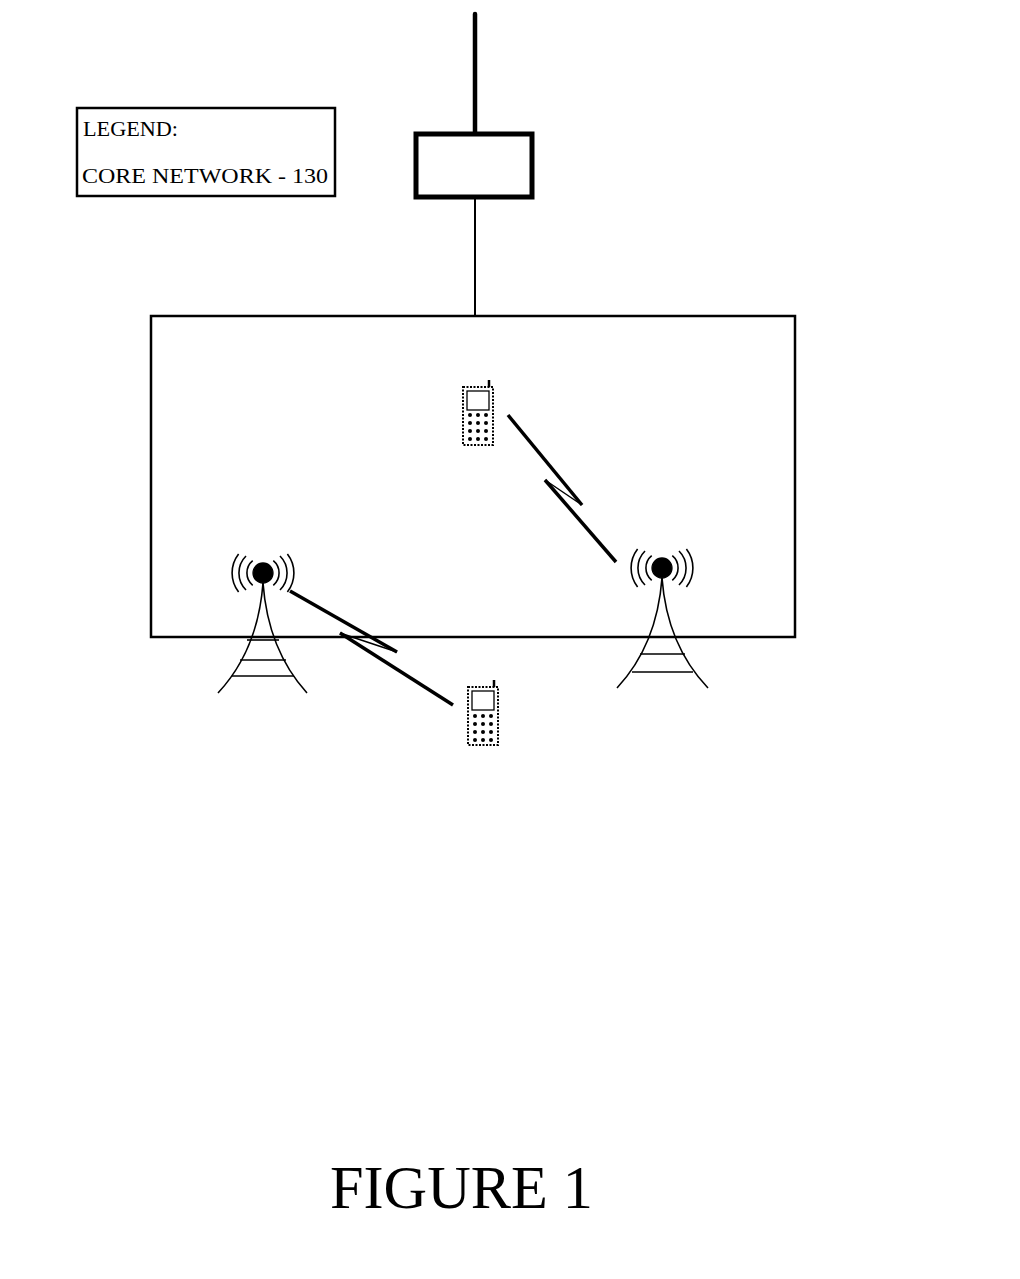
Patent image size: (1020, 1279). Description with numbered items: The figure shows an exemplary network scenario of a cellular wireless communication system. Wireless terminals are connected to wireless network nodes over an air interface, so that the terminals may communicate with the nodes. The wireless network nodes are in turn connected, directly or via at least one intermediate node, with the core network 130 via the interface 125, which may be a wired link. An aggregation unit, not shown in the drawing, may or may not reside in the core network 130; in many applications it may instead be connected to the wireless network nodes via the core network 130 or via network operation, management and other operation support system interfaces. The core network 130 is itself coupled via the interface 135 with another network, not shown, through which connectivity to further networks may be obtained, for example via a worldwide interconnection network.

The interface 125 is at (149, 386).
The core network 130 is at (496, 180).
The interface 135 is at (477, 50).